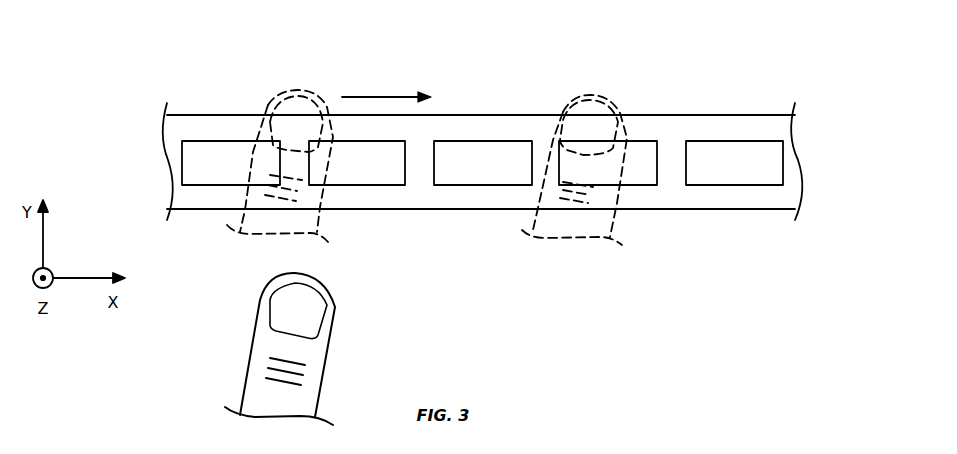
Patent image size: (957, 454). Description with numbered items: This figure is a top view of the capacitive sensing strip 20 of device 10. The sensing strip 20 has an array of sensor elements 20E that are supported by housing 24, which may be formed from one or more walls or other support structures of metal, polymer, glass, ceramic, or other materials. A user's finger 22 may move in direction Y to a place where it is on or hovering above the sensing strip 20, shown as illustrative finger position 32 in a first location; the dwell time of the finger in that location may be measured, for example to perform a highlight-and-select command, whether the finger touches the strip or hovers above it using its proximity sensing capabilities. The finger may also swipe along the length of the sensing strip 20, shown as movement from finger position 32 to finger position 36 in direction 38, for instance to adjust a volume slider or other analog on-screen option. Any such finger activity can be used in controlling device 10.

The device 10 is at (838, 139).
The sensing strip 20 is at (664, 131).
The sensor elements 20E is at (373, 173).
The finger 22 is at (328, 360).
The housing 24 is at (720, 193).
The finger position 32 is at (282, 92).
The finger position 36 is at (610, 100).
The direction 38 is at (377, 93).